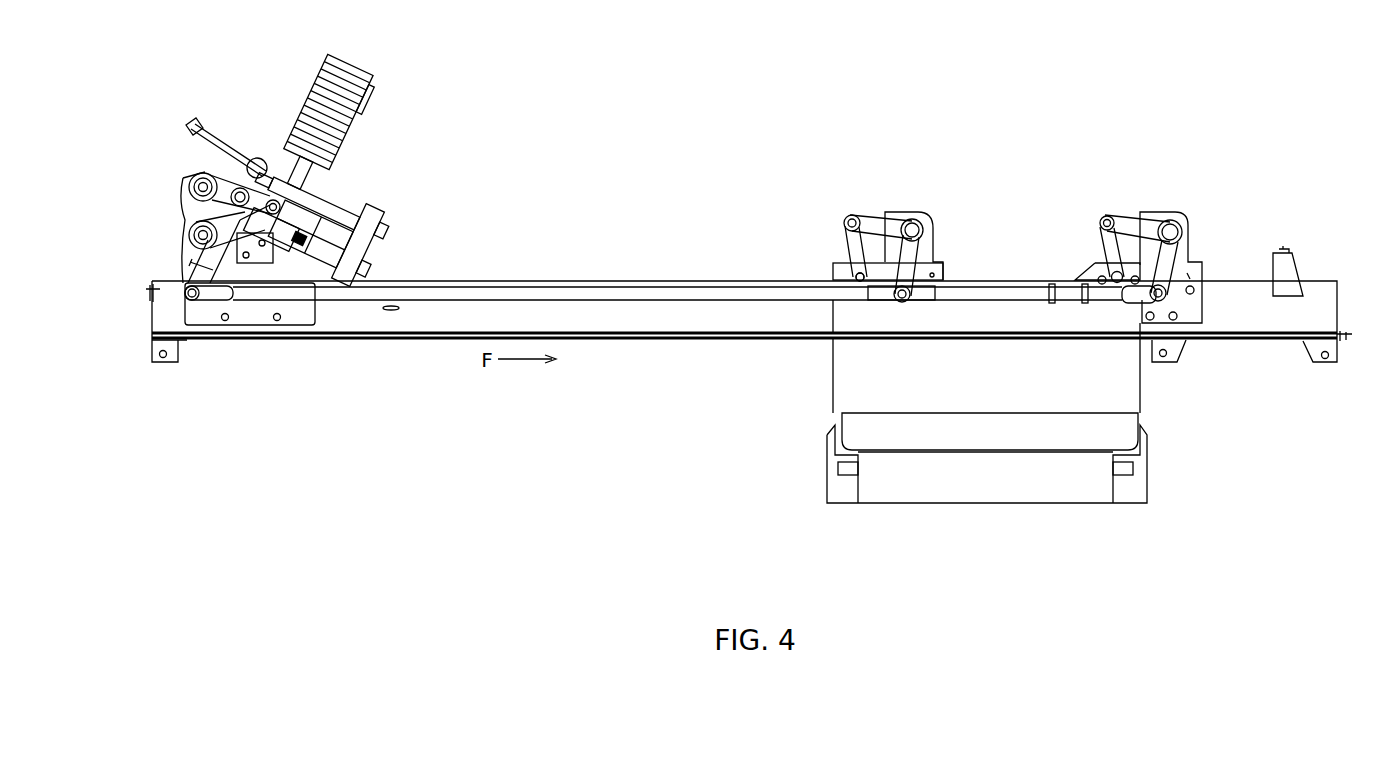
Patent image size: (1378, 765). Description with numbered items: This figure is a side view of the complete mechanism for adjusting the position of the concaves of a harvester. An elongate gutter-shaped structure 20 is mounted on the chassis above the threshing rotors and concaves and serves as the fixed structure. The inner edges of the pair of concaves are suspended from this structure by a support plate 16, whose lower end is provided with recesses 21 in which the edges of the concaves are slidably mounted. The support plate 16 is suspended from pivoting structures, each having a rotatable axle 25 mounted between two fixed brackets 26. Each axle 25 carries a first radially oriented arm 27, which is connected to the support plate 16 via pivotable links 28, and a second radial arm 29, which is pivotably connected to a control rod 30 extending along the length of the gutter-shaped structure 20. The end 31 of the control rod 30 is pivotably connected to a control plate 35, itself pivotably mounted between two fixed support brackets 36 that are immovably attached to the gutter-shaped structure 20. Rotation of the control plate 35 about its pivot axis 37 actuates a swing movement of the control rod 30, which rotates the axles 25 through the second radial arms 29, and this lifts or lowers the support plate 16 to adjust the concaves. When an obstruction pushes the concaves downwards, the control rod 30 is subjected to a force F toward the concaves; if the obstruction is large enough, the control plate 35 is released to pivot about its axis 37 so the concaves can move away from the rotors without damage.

The support plate 16 is at (1112, 378).
The gutter-shaped structure 20 is at (630, 322).
The recesses 21 is at (832, 465).
The rotatable axle 25 is at (918, 212).
The fixed brackets 26 is at (929, 237).
The first radially oriented arm 27 is at (866, 214).
The pivotable links 28 is at (848, 250).
The second radial arm 29 is at (938, 268).
The control rod 30 is at (660, 290).
The end of the control rod 31 is at (200, 326).
The control plate 35 is at (185, 188).
The fixed support brackets 36 is at (183, 250).
The pivot axis 37 is at (187, 222).